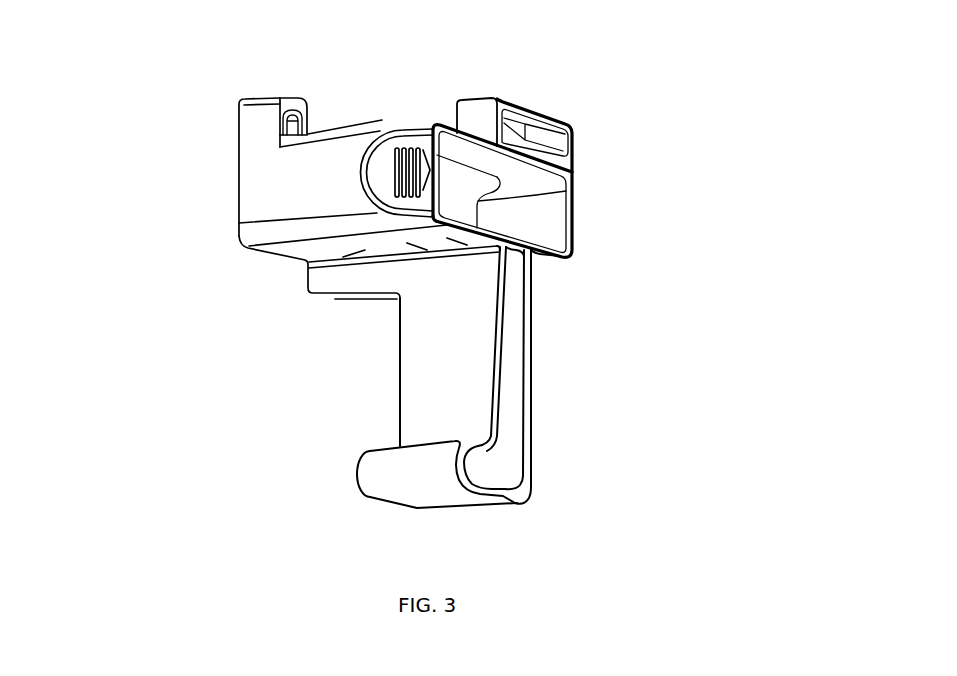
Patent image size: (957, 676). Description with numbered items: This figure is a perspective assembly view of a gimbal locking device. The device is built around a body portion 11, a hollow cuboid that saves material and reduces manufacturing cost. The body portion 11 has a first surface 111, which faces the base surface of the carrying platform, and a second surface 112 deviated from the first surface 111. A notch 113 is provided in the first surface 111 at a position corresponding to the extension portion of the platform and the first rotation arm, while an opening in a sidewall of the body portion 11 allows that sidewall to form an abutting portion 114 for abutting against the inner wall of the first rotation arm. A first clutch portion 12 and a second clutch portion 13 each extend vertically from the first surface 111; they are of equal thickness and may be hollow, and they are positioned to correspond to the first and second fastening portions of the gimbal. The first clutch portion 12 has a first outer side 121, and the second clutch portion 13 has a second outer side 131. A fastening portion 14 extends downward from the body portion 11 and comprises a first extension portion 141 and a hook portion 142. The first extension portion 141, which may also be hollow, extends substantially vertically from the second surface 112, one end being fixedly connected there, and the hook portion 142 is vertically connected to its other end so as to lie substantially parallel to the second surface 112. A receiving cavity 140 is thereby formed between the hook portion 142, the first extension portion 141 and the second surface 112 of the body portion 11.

The body portion 11 is at (320, 177).
The first surface 111 is at (333, 131).
The second surface 112 is at (368, 248).
The notch 113 is at (497, 177).
The abutting portion 114 is at (566, 191).
The first clutch portion 12 is at (572, 128).
The first outer side 121 is at (478, 120).
The second clutch portion 13 is at (285, 97).
The second outer side 131 is at (262, 133).
The fastening portion 14 is at (192, 405).
The receiving cavity 140 is at (440, 337).
The first extension portion 141 is at (433, 377).
The hook portion 142 is at (407, 472).